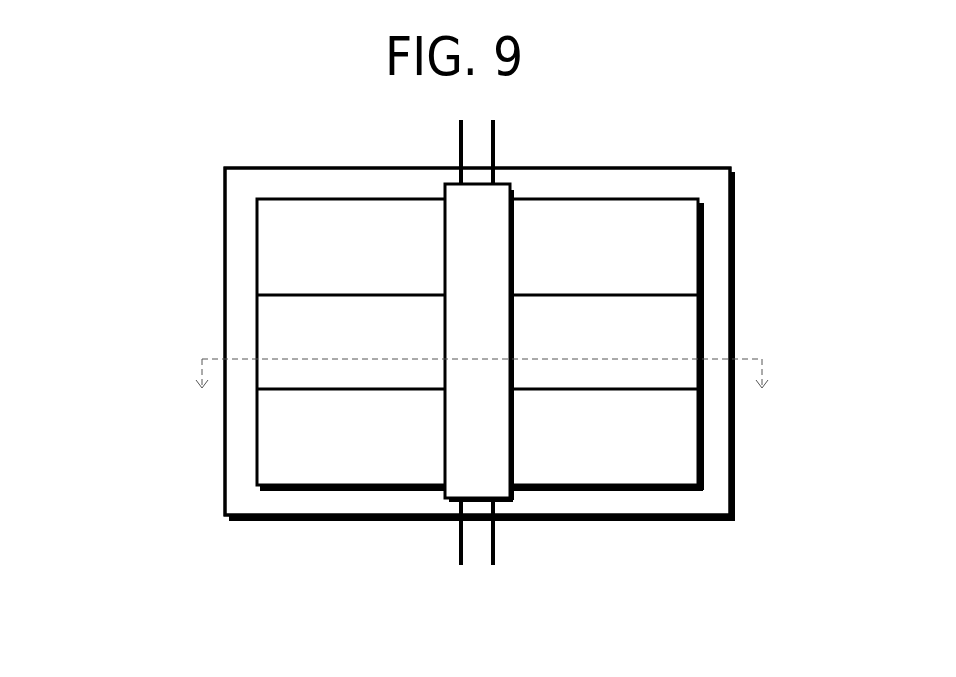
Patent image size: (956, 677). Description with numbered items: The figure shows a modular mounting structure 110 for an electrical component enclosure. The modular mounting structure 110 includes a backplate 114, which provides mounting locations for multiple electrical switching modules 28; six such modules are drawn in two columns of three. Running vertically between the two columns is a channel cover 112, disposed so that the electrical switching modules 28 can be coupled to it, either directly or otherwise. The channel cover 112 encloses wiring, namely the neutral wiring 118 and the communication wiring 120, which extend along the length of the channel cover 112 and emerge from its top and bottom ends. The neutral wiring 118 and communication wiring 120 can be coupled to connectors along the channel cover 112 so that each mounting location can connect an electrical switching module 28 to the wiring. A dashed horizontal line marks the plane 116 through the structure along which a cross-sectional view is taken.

The modular mounting structure 110 is at (131, 177).
The backplate 114 is at (224, 405).
The electrical switching modules 28 is at (703, 437).
The channel cover 112 is at (512, 503).
The communication wiring 120 is at (458, 148).
The neutral wiring 118 is at (495, 150).
The plane 116 is at (743, 359).